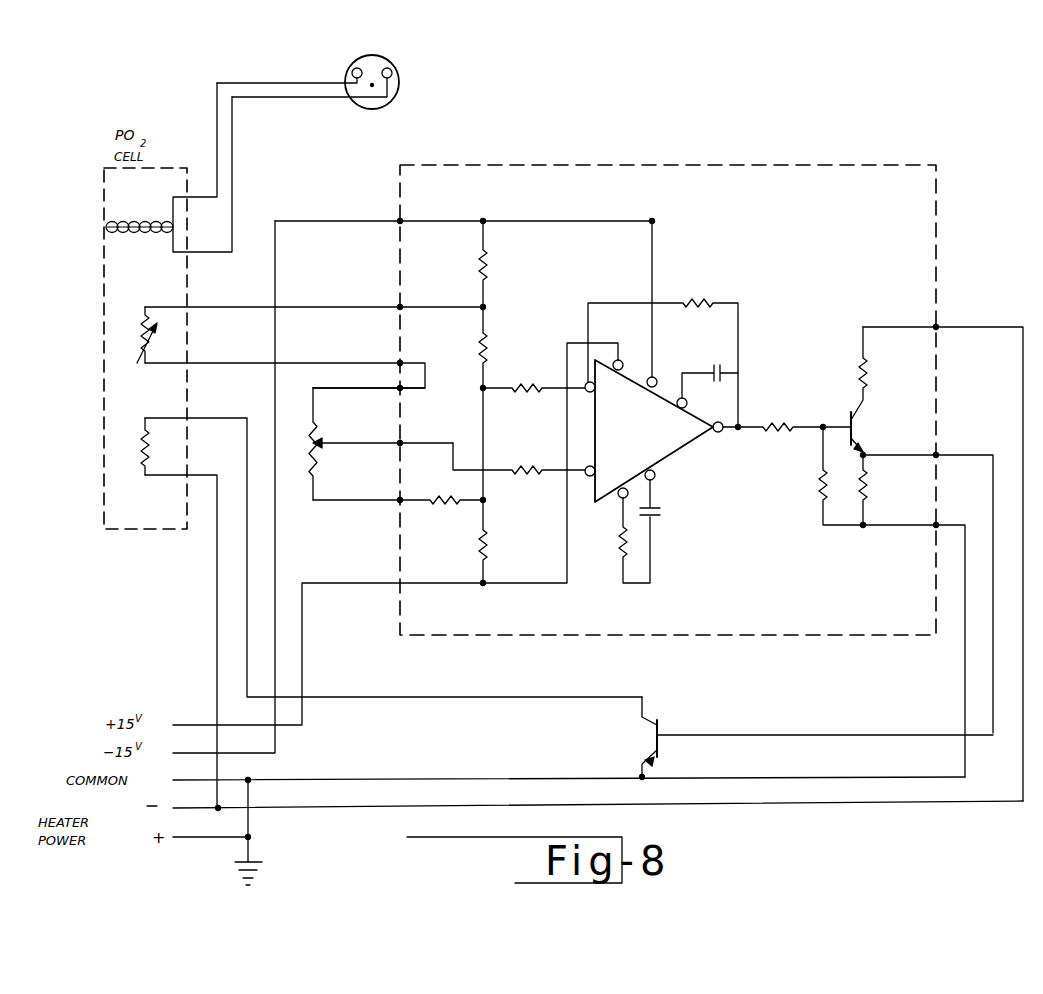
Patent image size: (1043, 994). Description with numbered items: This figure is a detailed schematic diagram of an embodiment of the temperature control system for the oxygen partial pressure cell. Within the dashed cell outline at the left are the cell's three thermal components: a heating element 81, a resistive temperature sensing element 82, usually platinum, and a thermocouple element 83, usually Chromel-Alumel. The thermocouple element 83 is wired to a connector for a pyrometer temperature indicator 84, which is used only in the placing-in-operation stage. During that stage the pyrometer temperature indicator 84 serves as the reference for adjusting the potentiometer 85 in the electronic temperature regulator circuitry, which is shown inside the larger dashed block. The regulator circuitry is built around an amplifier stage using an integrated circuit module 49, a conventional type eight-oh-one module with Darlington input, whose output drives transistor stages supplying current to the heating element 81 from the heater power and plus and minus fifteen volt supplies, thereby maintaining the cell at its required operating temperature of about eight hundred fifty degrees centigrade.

The integrated circuit module 49 is at (646, 438).
The heating element 81 is at (140, 460).
The resistive temperature sensing element 82 is at (137, 345).
The thermocouple element 83 is at (131, 216).
The pyrometer temperature indicator 84 is at (400, 82).
The potentiometer 85 is at (311, 478).